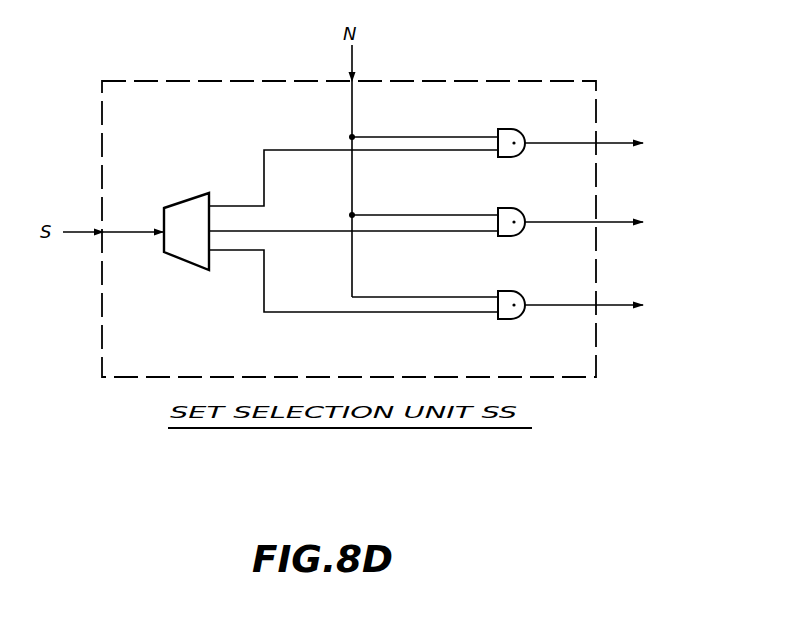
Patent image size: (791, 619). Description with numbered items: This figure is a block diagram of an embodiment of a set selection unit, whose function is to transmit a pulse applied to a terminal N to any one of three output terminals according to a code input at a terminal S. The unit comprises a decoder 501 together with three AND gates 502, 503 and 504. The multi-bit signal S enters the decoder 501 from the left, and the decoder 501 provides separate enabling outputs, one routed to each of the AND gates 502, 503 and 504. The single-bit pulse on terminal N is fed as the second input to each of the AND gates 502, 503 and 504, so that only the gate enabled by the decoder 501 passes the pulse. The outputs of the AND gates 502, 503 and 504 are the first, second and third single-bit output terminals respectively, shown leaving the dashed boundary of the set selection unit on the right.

The decoder 501 is at (230, 172).
The AND gate 502 is at (522, 129).
The AND gate 503 is at (522, 208).
The AND gate 504 is at (530, 283).